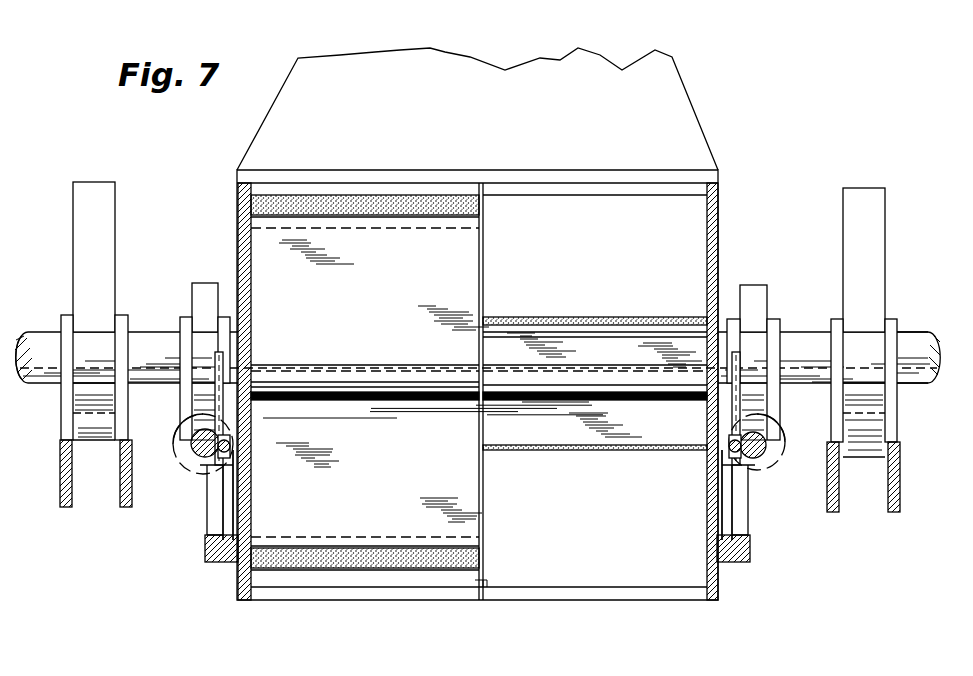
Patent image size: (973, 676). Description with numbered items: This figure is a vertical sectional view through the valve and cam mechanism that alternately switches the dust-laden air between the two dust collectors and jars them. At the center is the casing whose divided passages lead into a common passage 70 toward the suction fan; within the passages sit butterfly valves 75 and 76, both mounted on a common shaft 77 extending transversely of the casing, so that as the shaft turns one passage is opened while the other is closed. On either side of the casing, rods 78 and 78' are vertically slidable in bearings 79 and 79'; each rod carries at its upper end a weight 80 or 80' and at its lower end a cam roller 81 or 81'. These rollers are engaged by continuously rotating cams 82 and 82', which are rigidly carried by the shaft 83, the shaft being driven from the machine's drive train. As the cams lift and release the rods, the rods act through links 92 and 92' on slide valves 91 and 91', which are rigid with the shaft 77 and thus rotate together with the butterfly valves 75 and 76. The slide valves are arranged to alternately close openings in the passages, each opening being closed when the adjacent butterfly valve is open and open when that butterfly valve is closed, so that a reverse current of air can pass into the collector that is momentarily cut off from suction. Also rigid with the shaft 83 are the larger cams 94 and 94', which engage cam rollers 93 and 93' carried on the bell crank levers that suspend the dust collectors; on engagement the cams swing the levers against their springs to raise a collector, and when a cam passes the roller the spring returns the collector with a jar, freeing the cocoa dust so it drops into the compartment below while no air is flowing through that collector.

The common passage 70 is at (655, 108).
The butterfly valve 75 is at (556, 337).
The butterfly valve 76 is at (427, 382).
The common shaft 77 is at (781, 350).
The rod 78 is at (764, 446).
The rod 78' is at (191, 446).
The bearing 79 is at (774, 441).
The bearing 79' is at (186, 444).
The weight 80 is at (794, 417).
The weight 80' is at (154, 487).
The cam roller 81 is at (802, 504).
The cam roller 81' is at (201, 504).
The cam 82 is at (767, 350).
The cam 82' is at (205, 346).
The shaft 83 is at (915, 340).
The slide valve 91 is at (765, 537).
The slide valve 91' is at (207, 557).
The link 92 is at (706, 465).
The link 92' is at (264, 463).
The cam roller 93 is at (900, 412).
The cam roller 93' is at (59, 418).
The cam 94 is at (888, 350).
The cam 94' is at (116, 344).